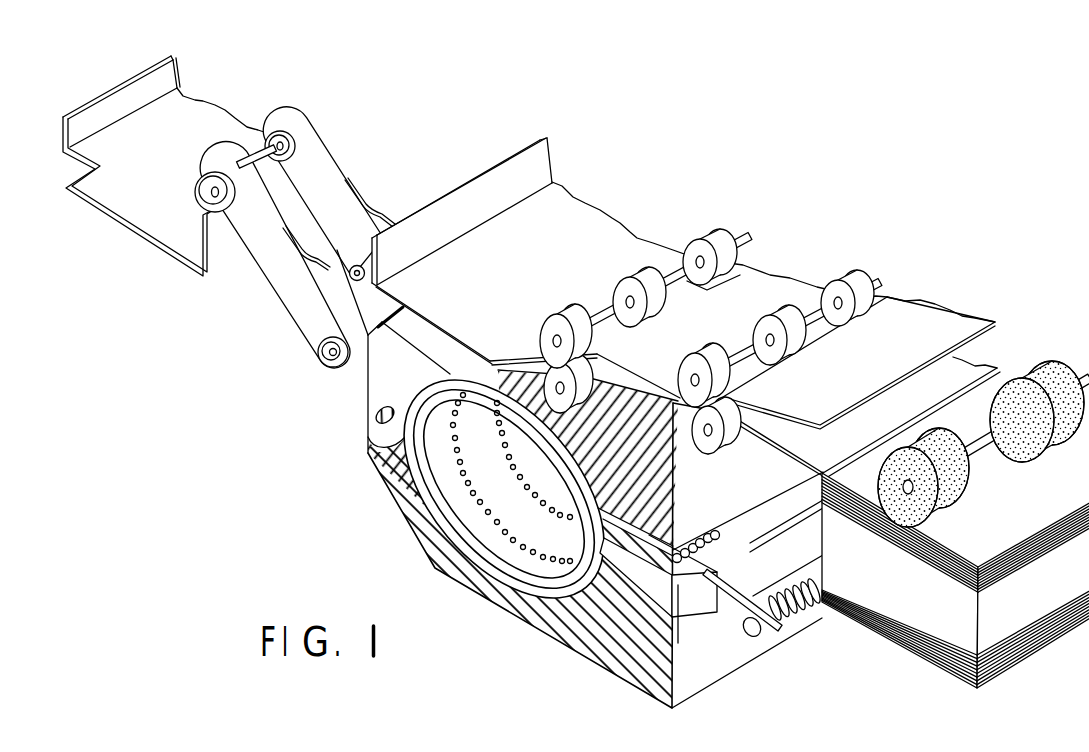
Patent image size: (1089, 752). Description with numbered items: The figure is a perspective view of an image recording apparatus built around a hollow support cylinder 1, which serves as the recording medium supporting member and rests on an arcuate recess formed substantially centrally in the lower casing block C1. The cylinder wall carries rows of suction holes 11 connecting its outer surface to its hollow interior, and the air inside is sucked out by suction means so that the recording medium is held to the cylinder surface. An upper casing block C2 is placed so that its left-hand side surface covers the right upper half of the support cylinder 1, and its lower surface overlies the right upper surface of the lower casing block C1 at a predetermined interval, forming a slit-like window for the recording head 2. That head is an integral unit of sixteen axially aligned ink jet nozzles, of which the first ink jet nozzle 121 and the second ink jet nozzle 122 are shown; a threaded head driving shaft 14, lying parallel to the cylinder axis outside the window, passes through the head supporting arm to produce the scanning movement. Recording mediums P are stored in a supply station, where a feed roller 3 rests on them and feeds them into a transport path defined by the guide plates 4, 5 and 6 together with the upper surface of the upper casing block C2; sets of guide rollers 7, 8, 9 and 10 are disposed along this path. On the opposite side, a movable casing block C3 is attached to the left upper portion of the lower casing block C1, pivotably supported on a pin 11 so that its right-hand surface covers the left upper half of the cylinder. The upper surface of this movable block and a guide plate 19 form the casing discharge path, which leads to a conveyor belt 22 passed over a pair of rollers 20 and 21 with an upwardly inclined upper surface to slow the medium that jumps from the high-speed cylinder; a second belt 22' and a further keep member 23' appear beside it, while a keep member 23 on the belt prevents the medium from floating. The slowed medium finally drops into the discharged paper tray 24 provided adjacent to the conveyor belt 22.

The recording medium supporting member 1 is at (485, 560).
The recording head 2 is at (638, 545).
The feed roller 3 is at (936, 439).
The guide plate 4 is at (835, 407).
The guide plate 5 is at (788, 442).
The guide plate 6 is at (643, 367).
The guide roller 7 is at (780, 373).
The guide roller 8 is at (710, 440).
The guide roller 9 is at (640, 333).
The guide roller 10 is at (577, 401).
The pin 11 is at (541, 534).
The head driving shaft 14 is at (753, 628).
The guide plate 19 is at (447, 318).
The roller 20 is at (332, 362).
The roller 21 is at (203, 192).
The conveyor belt 22 is at (275, 255).
The link arm 22' is at (326, 194).
The keep member 23 is at (306, 259).
The guide strip 23' is at (378, 197).
The discharged paper tray 24 is at (118, 208).
The ink jet nozzle 121 is at (662, 570).
The ink jet nozzle 122 is at (692, 555).
The lower casing block C1 is at (612, 644).
The upper casing block C2 is at (644, 469).
The movable casing block C3 is at (406, 386).
The recording mediums P is at (880, 618).